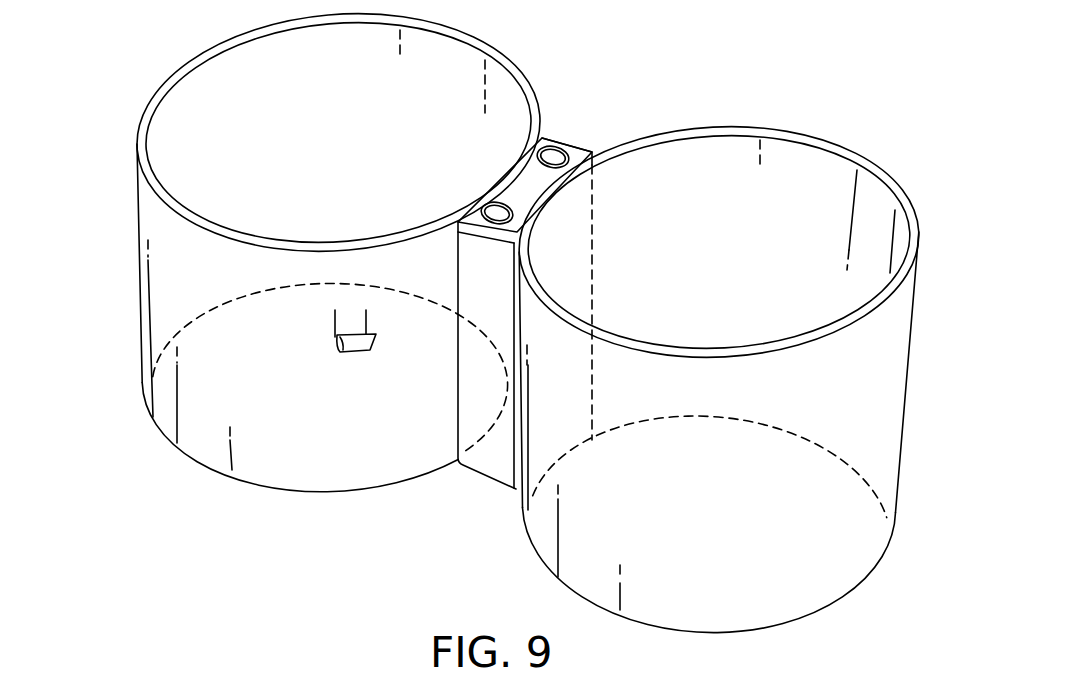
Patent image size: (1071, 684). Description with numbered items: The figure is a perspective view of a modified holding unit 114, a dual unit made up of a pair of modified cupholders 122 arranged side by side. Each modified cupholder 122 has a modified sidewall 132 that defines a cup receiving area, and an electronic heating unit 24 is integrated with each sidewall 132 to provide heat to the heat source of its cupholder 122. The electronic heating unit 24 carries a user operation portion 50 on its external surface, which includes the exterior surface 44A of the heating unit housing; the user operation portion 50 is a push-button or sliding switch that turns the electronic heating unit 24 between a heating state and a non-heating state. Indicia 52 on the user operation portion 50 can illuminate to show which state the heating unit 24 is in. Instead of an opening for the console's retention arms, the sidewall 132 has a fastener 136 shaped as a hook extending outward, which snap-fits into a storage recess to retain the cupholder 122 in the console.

The modified holding unit 114 is at (698, 52).
The modified cupholder 122 is at (512, 53).
The modified sidewall 132 is at (131, 303).
The electronic heating unit 24 is at (447, 274).
The exterior surface of housing 44A is at (532, 175).
The user operation portion 50 is at (578, 149).
The indicia 52 is at (540, 148).
The fastener 136 is at (333, 325).